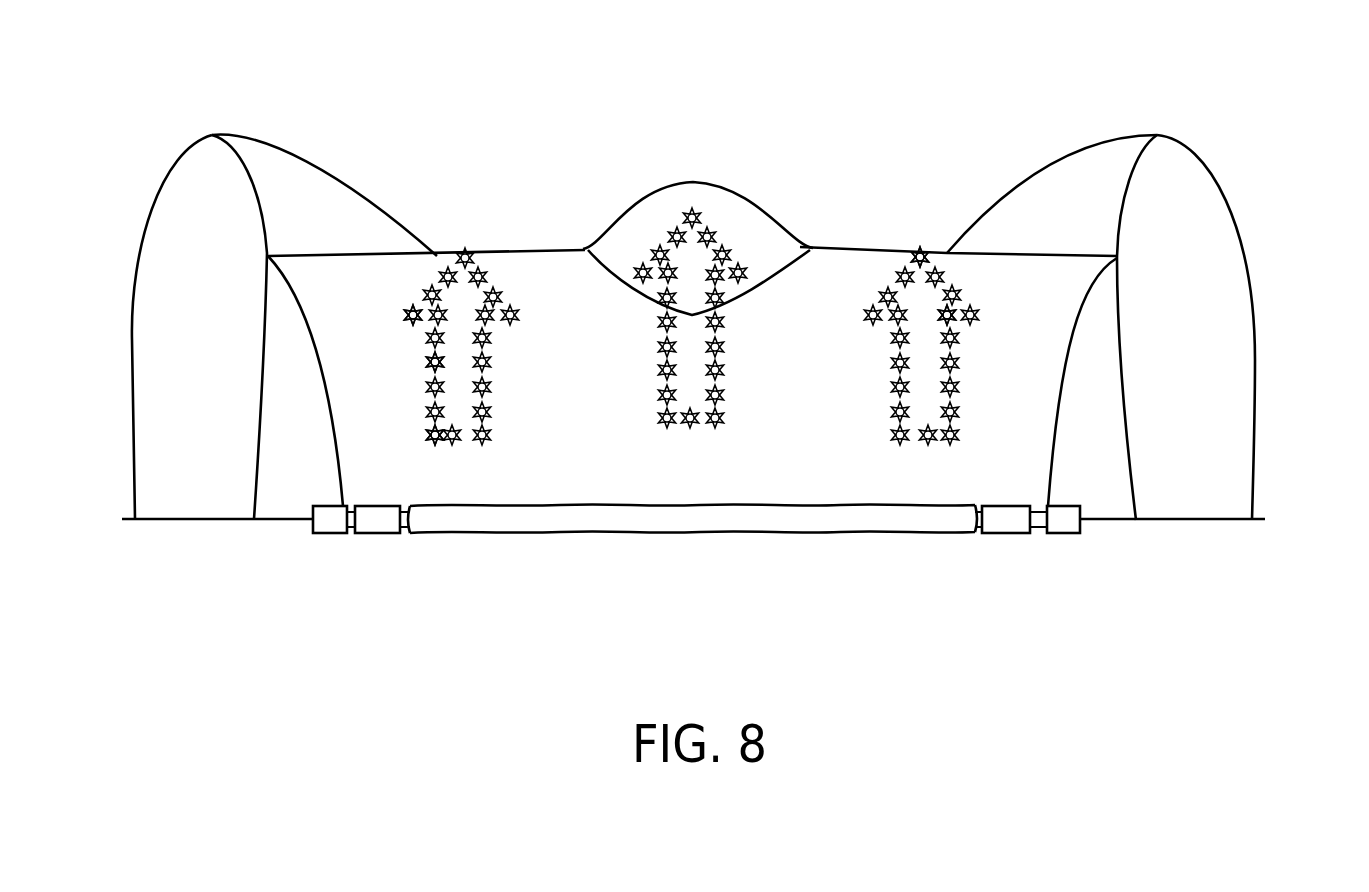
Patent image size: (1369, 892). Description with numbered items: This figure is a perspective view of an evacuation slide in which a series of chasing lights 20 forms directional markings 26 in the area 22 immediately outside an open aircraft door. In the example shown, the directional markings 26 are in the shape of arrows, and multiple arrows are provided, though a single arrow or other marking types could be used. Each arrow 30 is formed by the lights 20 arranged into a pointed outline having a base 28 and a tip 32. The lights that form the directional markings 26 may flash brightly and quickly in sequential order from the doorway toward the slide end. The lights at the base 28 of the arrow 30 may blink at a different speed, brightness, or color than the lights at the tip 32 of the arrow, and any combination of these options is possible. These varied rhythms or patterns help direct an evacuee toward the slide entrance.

The lights 20 is at (427, 363).
The area 22 is at (1026, 369).
The directional markings 26 is at (925, 417).
The base 28 is at (957, 445).
The arrow 30 is at (923, 318).
The tip 32 is at (923, 250).